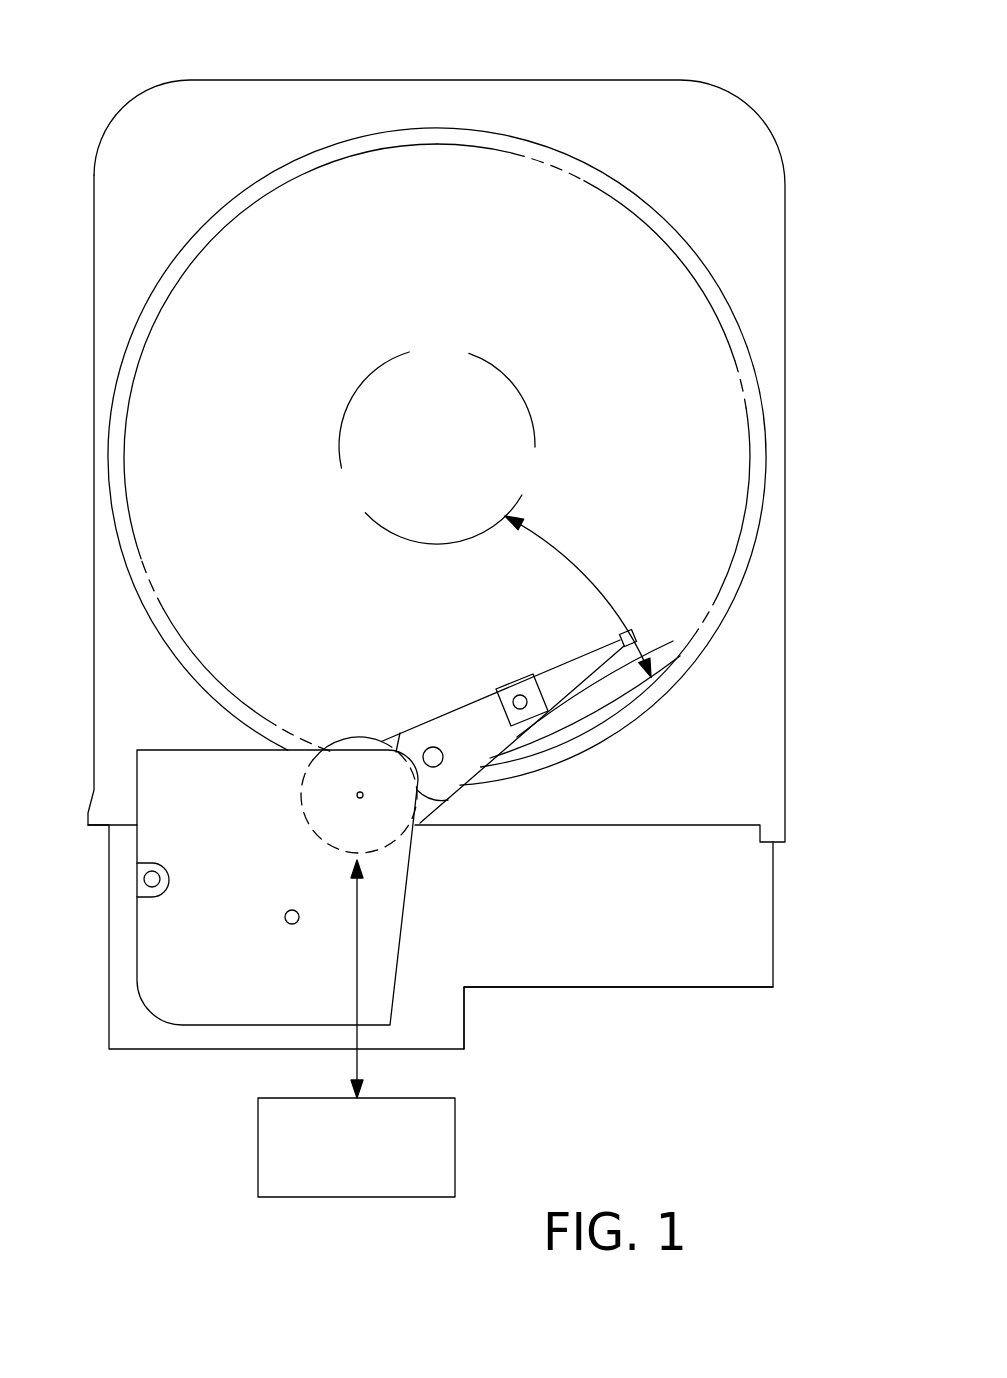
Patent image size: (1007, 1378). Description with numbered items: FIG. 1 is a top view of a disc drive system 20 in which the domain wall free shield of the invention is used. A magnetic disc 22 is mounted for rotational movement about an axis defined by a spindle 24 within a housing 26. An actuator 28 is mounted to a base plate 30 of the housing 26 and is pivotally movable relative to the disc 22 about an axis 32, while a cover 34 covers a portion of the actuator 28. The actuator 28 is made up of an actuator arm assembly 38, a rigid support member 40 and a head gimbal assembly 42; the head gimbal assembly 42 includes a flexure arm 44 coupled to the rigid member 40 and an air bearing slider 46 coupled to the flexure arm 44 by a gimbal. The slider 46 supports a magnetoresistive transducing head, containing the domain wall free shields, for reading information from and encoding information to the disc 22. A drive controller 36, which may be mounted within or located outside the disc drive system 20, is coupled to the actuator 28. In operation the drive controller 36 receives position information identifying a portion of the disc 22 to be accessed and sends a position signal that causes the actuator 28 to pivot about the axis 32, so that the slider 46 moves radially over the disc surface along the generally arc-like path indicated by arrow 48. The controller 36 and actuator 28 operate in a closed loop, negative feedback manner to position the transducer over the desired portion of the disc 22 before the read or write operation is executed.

The disc drive system 20 is at (256, 48).
The magnetic disc 22 is at (420, 235).
The spindle 24 is at (424, 457).
The housing 26 is at (785, 247).
The actuator 28 is at (447, 864).
The base plate 30 is at (568, 990).
The axis 32 is at (356, 795).
The cover 34 is at (172, 843).
The drive controller 36 is at (457, 1118).
The actuator arm assembly 38 is at (358, 716).
The rigid support member 40 is at (448, 775).
The head gimbal assembly 42 is at (583, 637).
The flexure arm 44 is at (543, 672).
The air bearing slider 46 is at (633, 630).
The arrow 48 is at (550, 548).